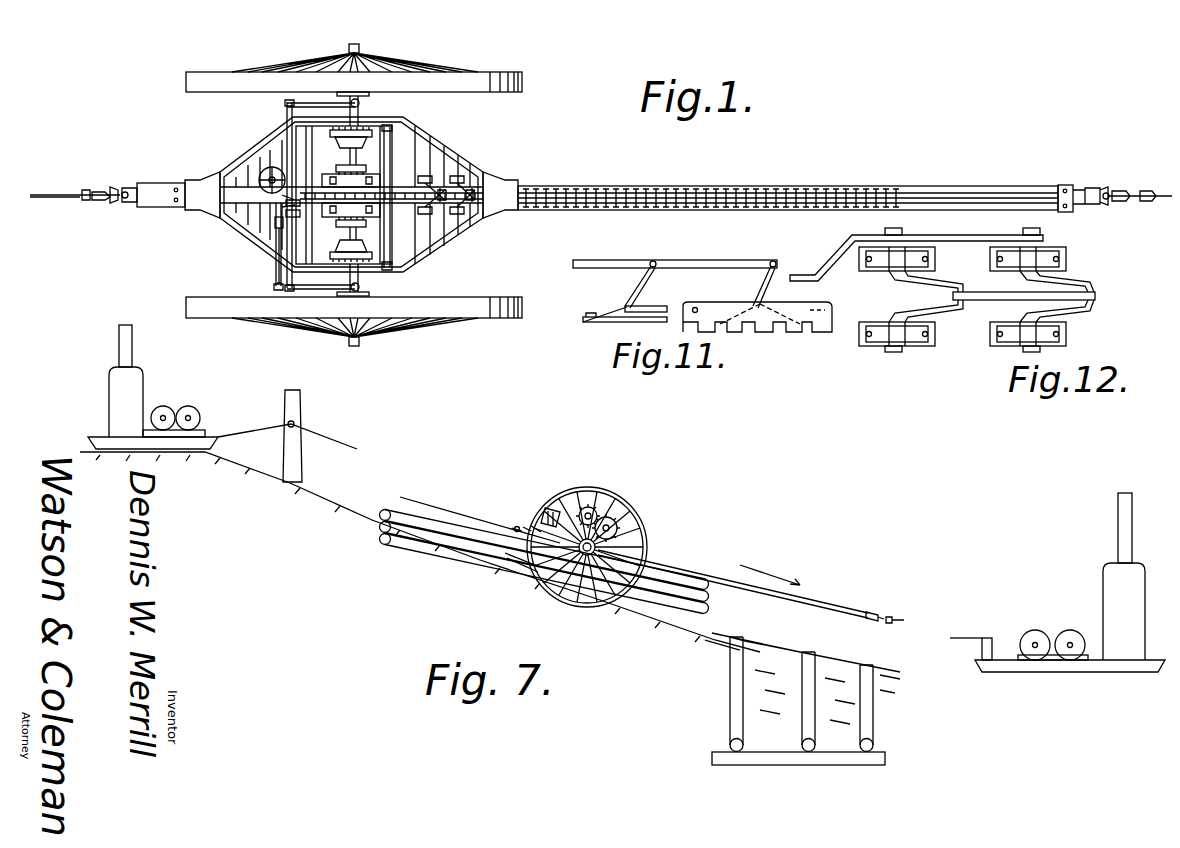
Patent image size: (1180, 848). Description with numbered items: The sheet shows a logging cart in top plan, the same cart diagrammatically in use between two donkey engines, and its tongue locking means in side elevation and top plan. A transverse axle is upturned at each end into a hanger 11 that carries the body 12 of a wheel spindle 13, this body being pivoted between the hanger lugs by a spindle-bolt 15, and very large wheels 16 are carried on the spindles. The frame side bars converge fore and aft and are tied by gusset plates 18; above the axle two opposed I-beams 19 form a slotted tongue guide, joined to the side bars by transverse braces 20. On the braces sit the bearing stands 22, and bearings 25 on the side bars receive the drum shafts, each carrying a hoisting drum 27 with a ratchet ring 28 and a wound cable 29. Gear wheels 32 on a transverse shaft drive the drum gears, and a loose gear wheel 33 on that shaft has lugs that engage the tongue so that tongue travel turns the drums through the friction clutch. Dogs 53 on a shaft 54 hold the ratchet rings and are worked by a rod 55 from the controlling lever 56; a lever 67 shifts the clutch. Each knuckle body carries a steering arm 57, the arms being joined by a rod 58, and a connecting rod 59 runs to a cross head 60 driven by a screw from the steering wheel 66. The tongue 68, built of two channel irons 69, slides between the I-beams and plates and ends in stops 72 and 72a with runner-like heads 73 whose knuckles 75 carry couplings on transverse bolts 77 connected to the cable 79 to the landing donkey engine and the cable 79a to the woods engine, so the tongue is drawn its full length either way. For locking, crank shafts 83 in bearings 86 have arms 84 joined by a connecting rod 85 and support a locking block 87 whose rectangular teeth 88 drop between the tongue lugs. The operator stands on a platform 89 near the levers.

In FIG. 1, the hanger 11 is at (359, 113).
In FIG. 1, the body of wheel spindle 12 is at (361, 102).
In FIG. 7, the wheel spindle 13 is at (588, 600).
In FIG. 1, the spindle-bolt 15 is at (335, 250).
In FIG. 1, the wheel 16 is at (452, 88).
In FIG. 7, the wheel 16 is at (645, 523).
In FIG. 1, the gusset plate 18 is at (206, 208).
In FIG. 1, the I-beam 19 is at (401, 180).
In FIG. 1, the transverse brace 20 is at (300, 152).
In FIG. 1, the bearing stand 22 is at (360, 194).
In FIG. 7, the bearing stand 22 is at (617, 532).
In FIG. 1, the bearing 25 is at (348, 238).
In FIG. 1, the hoisting drum 27 is at (440, 140).
In FIG. 1, the ratchet ring 28 is at (345, 128).
In FIG. 1, the cable 29 is at (343, 195).
In FIG. 7, the gear wheel 32 is at (605, 520).
In FIG. 1, the loose gear wheel 33 is at (392, 175).
In FIG. 7, the loose gear wheel 33 is at (596, 510).
In FIG. 1, the dog 53 is at (357, 139).
In FIG. 1, the shaft 54 is at (391, 232).
In FIG. 1, the rod 55 is at (350, 217).
In FIG. 1, the controlling lever 56 is at (288, 203).
In FIG. 1, the steering arm 57 is at (296, 110).
In FIG. 1, the rod 58 is at (288, 116).
In FIG. 1, the connecting rod 59 is at (276, 277).
In FIG. 1, the cross head 60 is at (276, 216).
In FIG. 1, the steering wheel 66 is at (262, 172).
In FIG. 1, the lever 67 is at (277, 230).
In FIG. 1, the tongue 68 is at (615, 209).
In FIG. 7, the tongue 68 is at (680, 566).
In FIG. 1, the channel iron 69 is at (597, 184).
In FIG. 1, the stop 72 is at (175, 208).
In FIG. 1, the stop 72a is at (1068, 182).
In FIG. 1, the head 73 is at (150, 206).
In FIG. 7, the head 73 is at (518, 527).
In FIG. 1, the knuckle 75 is at (359, 188).
In FIG. 1, the transverse bolt 77 is at (683, 188).
In FIG. 1, the cable 79 is at (1160, 202).
In FIG. 7, the cable 79 is at (900, 625).
In FIG. 1, the cable 79a is at (56, 198).
In FIG. 7, the cable 79a is at (425, 500).
In FIG. 1, the crank shaft 83 is at (458, 186).
In FIG. 11, the crank shaft 83 is at (625, 316).
In FIG. 12, the crank shaft 83 is at (905, 281).
In FIG. 11, the arm 84 is at (642, 286).
In FIG. 12, the arm 84 is at (899, 243).
In FIG. 1, the connecting rod 85 is at (421, 184).
In FIG. 11, the connecting rod 85 is at (627, 255).
In FIG. 12, the connecting rod 85 is at (800, 276).
In FIG. 11, the bearing 86 is at (585, 321).
In FIG. 12, the bearing 86 is at (859, 266).
In FIG. 1, the locking block 87 is at (446, 210).
In FIG. 11, the locking block 87 is at (780, 326).
In FIG. 12, the locking block 87 is at (990, 300).
In FIG. 11, the rectangular tooth 88 is at (800, 331).
In FIG. 1, the platform 89 is at (250, 214).
In FIG. 7, the platform 89 is at (508, 556).